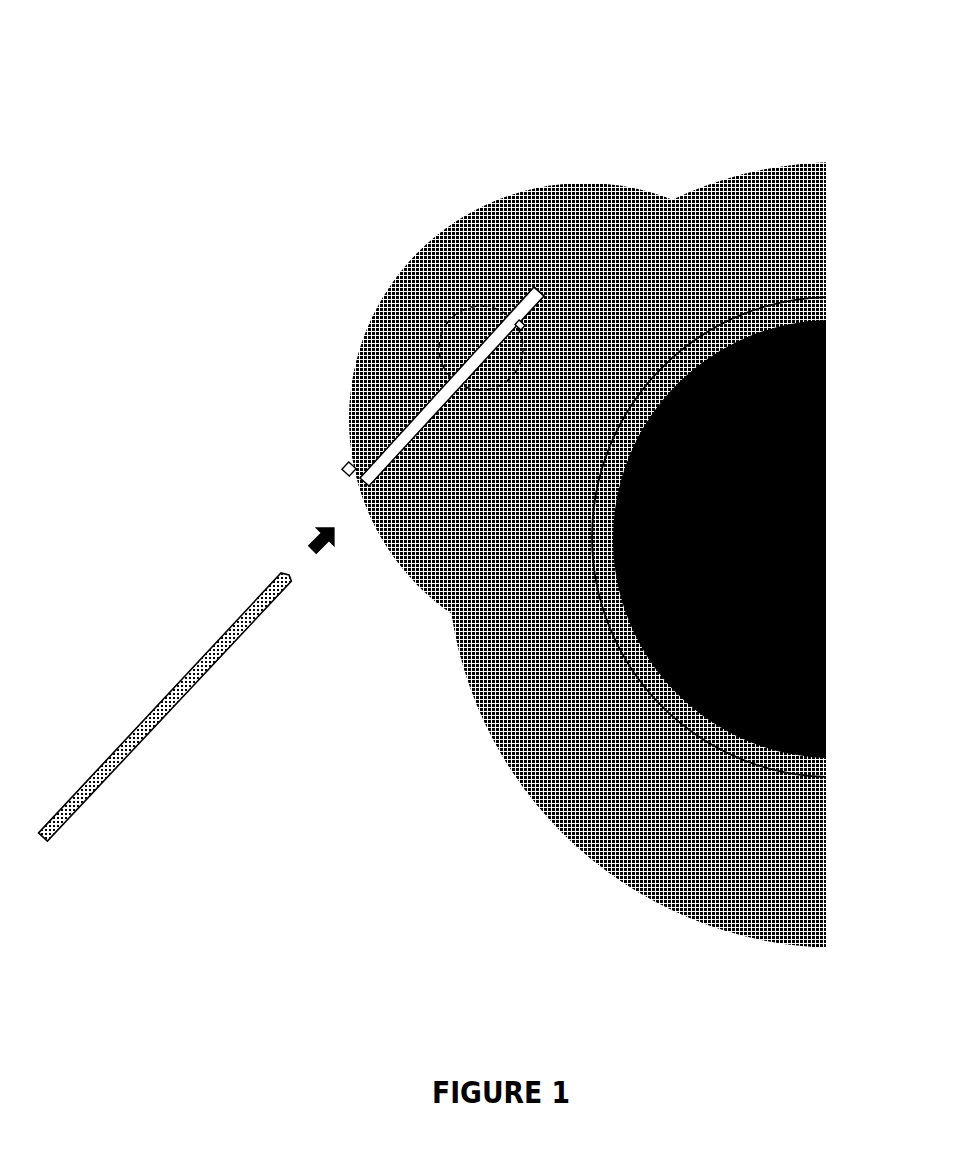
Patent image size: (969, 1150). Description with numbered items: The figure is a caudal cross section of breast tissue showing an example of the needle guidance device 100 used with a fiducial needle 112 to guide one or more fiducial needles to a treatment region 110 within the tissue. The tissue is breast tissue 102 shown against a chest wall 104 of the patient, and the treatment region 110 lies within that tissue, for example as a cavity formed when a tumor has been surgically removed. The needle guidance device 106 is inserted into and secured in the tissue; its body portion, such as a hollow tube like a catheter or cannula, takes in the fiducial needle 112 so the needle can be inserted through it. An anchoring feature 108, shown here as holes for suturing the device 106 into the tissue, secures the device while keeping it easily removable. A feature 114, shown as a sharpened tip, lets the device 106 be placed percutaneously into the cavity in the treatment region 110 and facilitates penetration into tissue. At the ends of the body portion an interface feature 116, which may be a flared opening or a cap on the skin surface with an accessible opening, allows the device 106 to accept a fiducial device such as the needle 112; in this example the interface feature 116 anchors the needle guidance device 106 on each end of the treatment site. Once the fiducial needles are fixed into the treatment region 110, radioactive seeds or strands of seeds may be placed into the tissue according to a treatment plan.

The needle guidance device 100 is at (173, 135).
The breast tissue 102 is at (698, 272).
The chest wall 104 is at (767, 317).
The needle guidance device 106 is at (385, 446).
The anchoring feature 108 is at (507, 313).
The treatment region 110 is at (447, 328).
The fiducial needle 112 is at (172, 718).
The feature 114 is at (540, 283).
The interface feature 116 is at (342, 466).